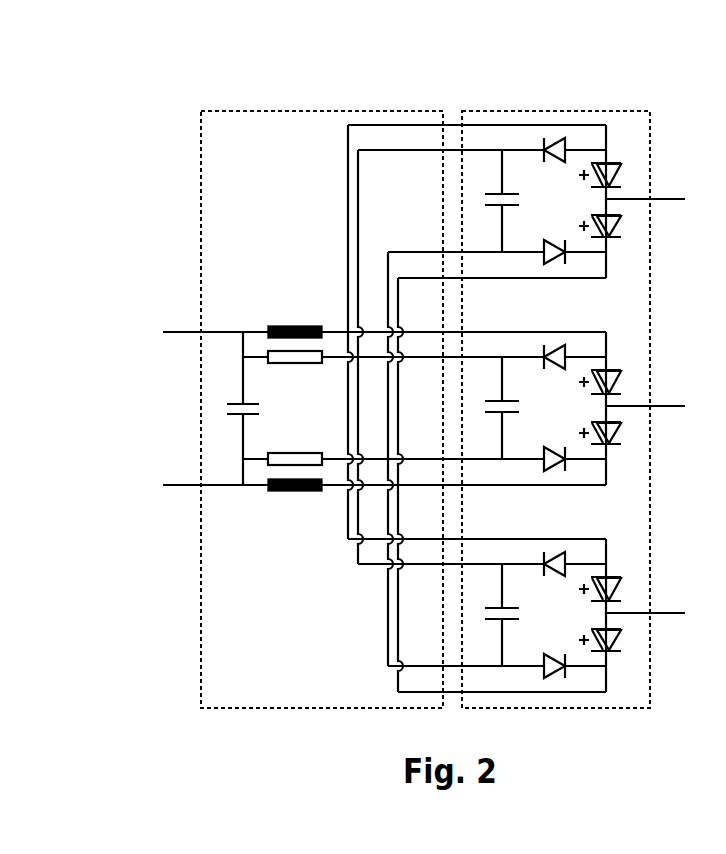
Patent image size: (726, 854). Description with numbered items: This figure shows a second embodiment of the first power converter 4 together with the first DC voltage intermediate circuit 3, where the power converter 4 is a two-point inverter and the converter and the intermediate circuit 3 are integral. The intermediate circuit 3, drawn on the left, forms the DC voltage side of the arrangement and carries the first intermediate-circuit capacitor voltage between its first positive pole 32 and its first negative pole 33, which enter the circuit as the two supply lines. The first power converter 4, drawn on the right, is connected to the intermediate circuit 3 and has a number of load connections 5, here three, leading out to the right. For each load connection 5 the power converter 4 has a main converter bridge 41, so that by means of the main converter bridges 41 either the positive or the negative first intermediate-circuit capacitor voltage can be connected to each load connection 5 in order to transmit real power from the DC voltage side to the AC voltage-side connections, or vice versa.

The first DC voltage intermediate circuit 3 is at (321, 110).
The first power converter 4 is at (555, 110).
The load connections 5 is at (661, 197).
The first positive pole 32 is at (243, 330).
The first negative pole 33 is at (241, 492).
The main converter bridge 41 is at (612, 257).